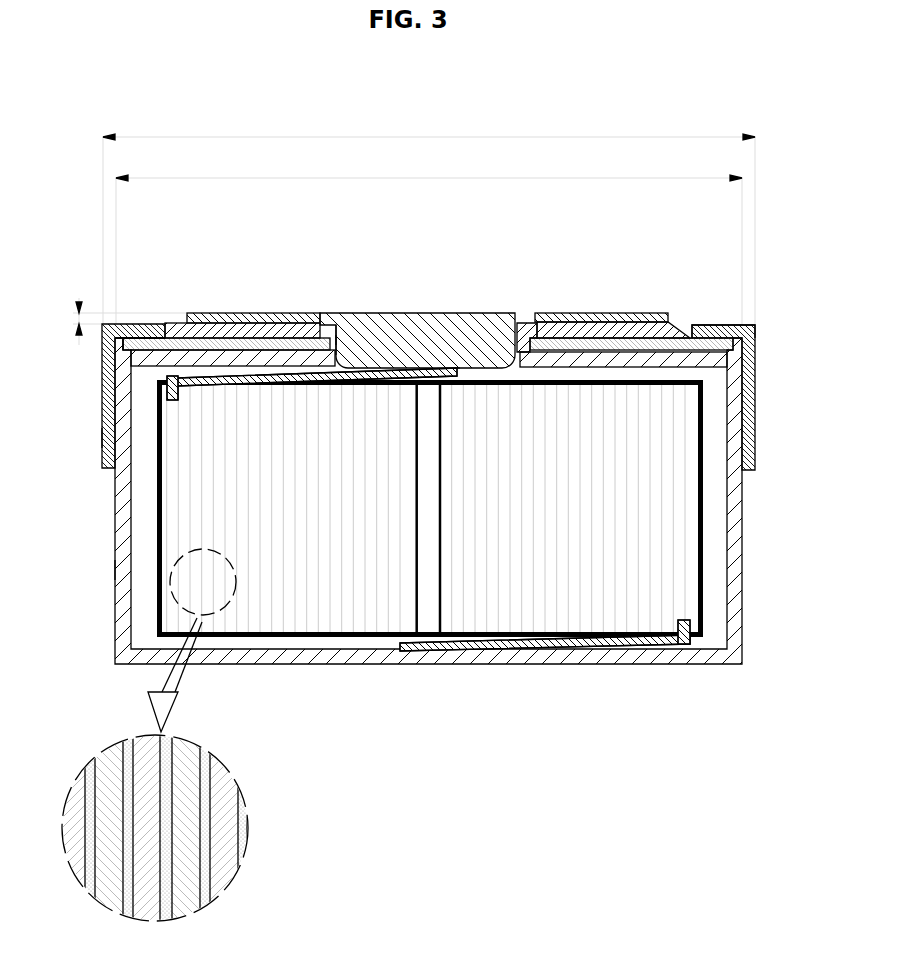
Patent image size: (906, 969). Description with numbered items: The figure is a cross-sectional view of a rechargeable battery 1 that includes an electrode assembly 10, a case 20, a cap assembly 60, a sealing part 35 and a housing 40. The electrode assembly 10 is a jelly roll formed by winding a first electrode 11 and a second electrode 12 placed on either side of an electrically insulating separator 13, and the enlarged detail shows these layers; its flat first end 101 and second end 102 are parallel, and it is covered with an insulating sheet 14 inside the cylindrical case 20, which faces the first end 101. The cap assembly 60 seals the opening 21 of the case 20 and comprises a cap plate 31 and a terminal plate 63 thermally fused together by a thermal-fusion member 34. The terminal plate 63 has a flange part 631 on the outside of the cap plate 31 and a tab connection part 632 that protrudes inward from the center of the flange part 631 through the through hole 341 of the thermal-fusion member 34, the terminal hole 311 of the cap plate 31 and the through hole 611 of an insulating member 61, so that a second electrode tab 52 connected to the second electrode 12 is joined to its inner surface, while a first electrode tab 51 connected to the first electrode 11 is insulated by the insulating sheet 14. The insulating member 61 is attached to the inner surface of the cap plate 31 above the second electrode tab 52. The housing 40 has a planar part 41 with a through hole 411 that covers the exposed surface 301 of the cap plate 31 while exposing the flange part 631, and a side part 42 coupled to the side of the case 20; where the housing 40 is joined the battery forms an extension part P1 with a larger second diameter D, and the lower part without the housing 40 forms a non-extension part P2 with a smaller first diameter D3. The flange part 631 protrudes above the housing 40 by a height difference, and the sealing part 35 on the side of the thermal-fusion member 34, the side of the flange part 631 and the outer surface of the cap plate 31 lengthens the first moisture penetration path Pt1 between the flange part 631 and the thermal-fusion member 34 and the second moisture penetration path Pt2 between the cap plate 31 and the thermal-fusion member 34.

The rechargeable battery 1 is at (409, 511).
The electrode assembly 10 is at (295, 592).
The first end 101 is at (355, 652).
The second end 102 is at (590, 366).
The first electrode 11 is at (148, 912).
The second electrode 12 is at (187, 912).
The separator 13 is at (207, 840).
The insulating sheet 14 is at (703, 560).
The case 20 is at (101, 522).
The opening 21 is at (143, 324).
The exposed surface 301 is at (127, 337).
The cap plate 31 is at (268, 342).
The terminal hole 311 is at (528, 338).
The thermal-fusion member 34 is at (238, 330).
The through hole 341 is at (538, 327).
The sealing part 35 is at (165, 338).
The housing 40 is at (88, 390).
The planar part 41 is at (713, 325).
The through hole 411 is at (676, 322).
The side part 42 is at (755, 398).
The first electrode tab 51 is at (588, 644).
The second electrode tab 52 is at (287, 372).
The cap assembly 60 is at (485, 395).
The insulating member 61 is at (210, 357).
The through hole 611 is at (520, 343).
The terminal plate 63 is at (351, 279).
The flange part 631 is at (308, 315).
The tab connection part 632 is at (320, 229).
The extension part P1 is at (76, 438).
The non-extension part P2 is at (89, 570).
The first moisture penetration path Pt1 is at (338, 322).
The second moisture penetration path Pt2 is at (338, 337).
The second diameter D is at (429, 215).
The first diameter D3 is at (429, 237).